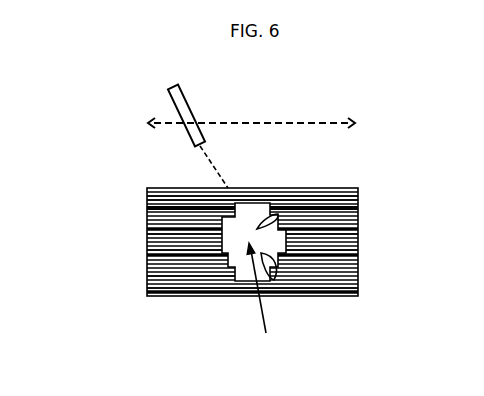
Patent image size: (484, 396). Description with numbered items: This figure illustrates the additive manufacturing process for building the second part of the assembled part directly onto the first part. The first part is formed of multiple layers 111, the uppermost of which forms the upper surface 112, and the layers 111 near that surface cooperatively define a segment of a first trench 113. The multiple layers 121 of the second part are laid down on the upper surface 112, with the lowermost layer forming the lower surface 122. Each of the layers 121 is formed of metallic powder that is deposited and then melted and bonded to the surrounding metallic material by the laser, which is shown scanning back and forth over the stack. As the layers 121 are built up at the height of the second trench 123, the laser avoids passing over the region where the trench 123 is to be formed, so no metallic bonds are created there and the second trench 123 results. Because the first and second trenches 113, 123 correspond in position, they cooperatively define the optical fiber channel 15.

The optical fiber channel 15 is at (263, 299).
The multiple layers 111 is at (188, 290).
The upper surface 112 is at (167, 250).
The first trench 113 is at (270, 258).
The multiple layers 121 is at (172, 197).
The lower surface 122 is at (158, 235).
The second trench 123 is at (273, 227).